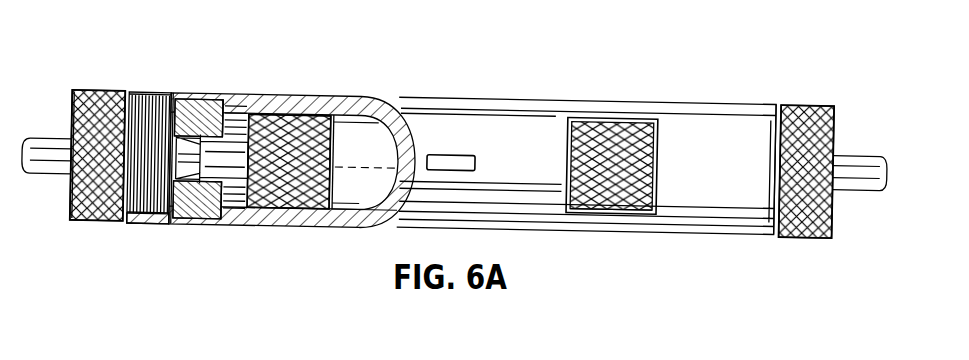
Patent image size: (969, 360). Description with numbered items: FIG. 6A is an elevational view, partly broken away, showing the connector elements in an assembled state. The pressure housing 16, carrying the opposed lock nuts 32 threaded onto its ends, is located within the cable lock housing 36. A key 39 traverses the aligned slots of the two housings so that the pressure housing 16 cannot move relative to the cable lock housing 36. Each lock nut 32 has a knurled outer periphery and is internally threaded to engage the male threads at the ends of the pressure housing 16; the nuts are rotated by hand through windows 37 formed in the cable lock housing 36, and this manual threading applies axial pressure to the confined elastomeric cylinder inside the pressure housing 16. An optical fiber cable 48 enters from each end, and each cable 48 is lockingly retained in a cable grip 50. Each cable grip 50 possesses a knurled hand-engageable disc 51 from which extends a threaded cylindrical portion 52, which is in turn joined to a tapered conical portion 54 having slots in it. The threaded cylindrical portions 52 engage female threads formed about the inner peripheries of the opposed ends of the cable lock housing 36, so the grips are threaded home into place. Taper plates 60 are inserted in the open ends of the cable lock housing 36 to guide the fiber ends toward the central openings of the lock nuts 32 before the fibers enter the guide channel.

The pressure housing 16 is at (365, 187).
The lock nut 32 is at (298, 125).
The cable lock housing 36 is at (707, 100).
The window 37 is at (640, 190).
The key 39 is at (455, 155).
The optical fiber cable 48 is at (48, 142).
The cable grip 50 is at (102, 90).
The knurled hand-engageable disc 51 is at (99, 208).
The threaded cylindrical portion 52 is at (160, 106).
The tapered conical portion 54 is at (200, 108).
The taper plate 60 is at (198, 208).